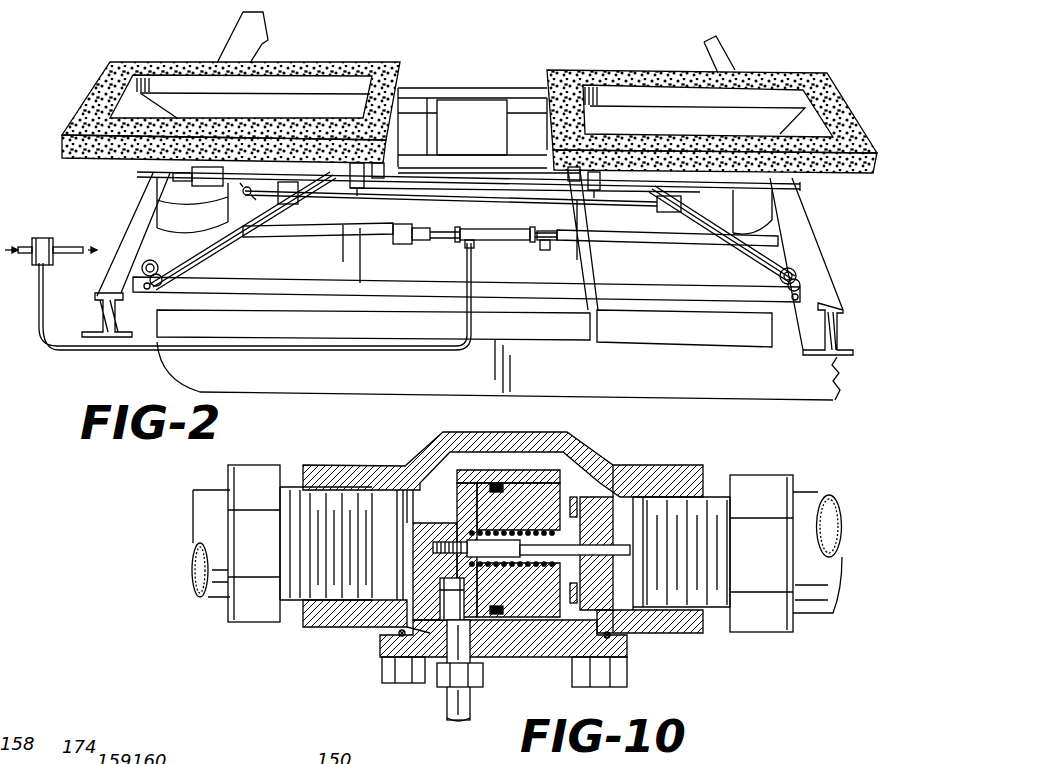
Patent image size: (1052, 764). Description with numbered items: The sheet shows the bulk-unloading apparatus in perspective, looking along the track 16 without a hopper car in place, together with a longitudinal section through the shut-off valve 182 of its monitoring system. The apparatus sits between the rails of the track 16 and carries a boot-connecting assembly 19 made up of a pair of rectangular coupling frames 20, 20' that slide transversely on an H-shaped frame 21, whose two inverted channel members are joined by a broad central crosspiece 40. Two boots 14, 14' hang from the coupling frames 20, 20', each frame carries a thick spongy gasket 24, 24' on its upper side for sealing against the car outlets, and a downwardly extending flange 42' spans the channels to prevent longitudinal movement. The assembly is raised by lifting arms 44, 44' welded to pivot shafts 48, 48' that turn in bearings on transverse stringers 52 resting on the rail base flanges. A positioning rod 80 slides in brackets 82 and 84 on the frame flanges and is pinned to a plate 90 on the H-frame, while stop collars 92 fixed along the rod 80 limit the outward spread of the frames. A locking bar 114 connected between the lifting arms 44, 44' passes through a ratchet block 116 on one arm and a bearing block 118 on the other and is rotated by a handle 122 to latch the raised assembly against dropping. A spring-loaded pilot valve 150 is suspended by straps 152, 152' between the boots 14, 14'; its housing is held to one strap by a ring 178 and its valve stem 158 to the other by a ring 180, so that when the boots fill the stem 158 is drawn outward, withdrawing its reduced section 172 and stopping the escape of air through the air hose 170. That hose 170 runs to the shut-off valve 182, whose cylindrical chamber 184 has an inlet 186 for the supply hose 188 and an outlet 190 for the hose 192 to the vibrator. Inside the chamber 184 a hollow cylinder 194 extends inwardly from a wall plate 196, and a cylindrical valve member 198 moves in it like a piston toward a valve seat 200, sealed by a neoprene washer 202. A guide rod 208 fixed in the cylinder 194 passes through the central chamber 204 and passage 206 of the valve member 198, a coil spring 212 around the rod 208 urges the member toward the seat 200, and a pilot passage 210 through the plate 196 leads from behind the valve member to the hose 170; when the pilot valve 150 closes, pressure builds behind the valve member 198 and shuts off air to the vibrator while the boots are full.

In FIG. 2, the boot 14 is at (684, 300).
In FIG. 2, the boot 14' is at (498, 322).
In FIG. 2, the track 16 is at (127, 245).
In FIG. 2, the boot-connecting assembly 19 is at (400, 80).
In FIG. 2, the coupling frame 20 is at (715, 185).
In FIG. 2, the coupling frame 20' is at (224, 160).
In FIG. 2, the H-shaped frame 21 is at (442, 87).
In FIG. 2, the spongy gasket 24 is at (712, 92).
In FIG. 2, the spongy gasket 24' is at (225, 101).
In FIG. 2, the central crosspiece 40 is at (487, 134).
In FIG. 2, the downwardly extending flange 42' is at (160, 203).
In FIG. 2, the lifting arm 44 is at (722, 234).
In FIG. 2, the lifting arm 44' is at (243, 231).
In FIG. 2, the pivot shaft 48 is at (818, 260).
In FIG. 2, the pivot shaft 48' is at (176, 296).
In FIG. 2, the transverse stringer 52 is at (533, 294).
In FIG. 2, the positioning rod 80 is at (463, 181).
In FIG. 2, the bracket 82 is at (574, 166).
In FIG. 2, the bracket 84 is at (384, 165).
In FIG. 2, the plate 90 is at (201, 187).
In FIG. 2, the stop collar 92 is at (355, 162).
In FIG. 2, the locking bar 114 is at (462, 200).
In FIG. 2, the ratchet block 116 is at (660, 213).
In FIG. 2, the bearing block 118 is at (298, 202).
In FIG. 2, the handle 122 is at (249, 188).
In FIG. 2, the pilot valve 150 is at (507, 230).
In FIG. 2, the strap 152 is at (667, 253).
In FIG. 2, the strap 152' is at (316, 242).
In FIG. 2, the valve stem and piston rod 158 is at (413, 241).
In FIG. 2, the air hose 170 is at (408, 350).
In FIG. 10, the air hose 170 is at (440, 703).
In FIG. 2, the reduced-diameter section 172 is at (436, 241).
In FIG. 2, the ring 178 is at (543, 243).
In FIG. 2, the ring 180 is at (407, 218).
In FIG. 2, the shut-off valve 182 is at (40, 238).
In FIG. 10, the shut-off valve 182 is at (613, 467).
In FIG. 10, the cylindrical chamber 184 is at (450, 462).
In FIG. 10, the inlet 186 is at (668, 590).
In FIG. 2, the air hose 188 is at (26, 263).
In FIG. 10, the air hose 188 is at (817, 615).
In FIG. 10, the outlet 190 is at (387, 497).
In FIG. 2, the hose 192 is at (72, 262).
In FIG. 10, the hose 192 is at (197, 588).
In FIG. 10, the hollow cylinder 194 is at (528, 470).
In FIG. 10, the wall plate 196 is at (630, 652).
In FIG. 10, the valve member 198 is at (508, 660).
In FIG. 10, the valve seat 200 is at (657, 474).
In FIG. 10, the neoprene washer 202 is at (567, 667).
In FIG. 10, the central chamber 204 is at (518, 606).
In FIG. 10, the passage 206 is at (527, 483).
In FIG. 10, the guide rod 208 is at (476, 543).
In FIG. 10, the pilot passage 210 is at (400, 638).
In FIG. 10, the coil spring 212 is at (514, 480).